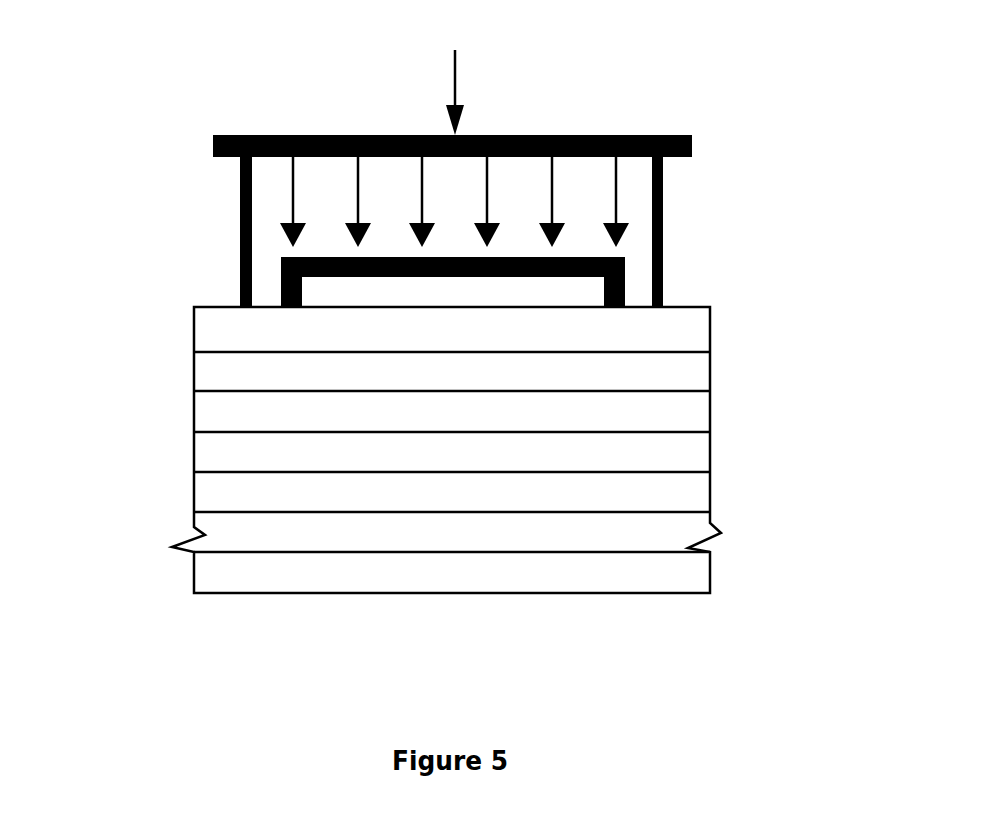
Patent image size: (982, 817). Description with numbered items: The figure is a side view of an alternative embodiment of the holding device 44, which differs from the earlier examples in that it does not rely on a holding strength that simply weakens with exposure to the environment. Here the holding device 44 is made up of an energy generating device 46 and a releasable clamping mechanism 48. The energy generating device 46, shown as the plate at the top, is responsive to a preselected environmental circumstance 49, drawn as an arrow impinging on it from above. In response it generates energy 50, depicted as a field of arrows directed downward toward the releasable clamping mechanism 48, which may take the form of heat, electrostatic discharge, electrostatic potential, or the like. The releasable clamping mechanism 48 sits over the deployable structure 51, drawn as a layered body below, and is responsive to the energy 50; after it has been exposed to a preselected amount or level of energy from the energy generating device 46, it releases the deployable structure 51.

The holding device 44 is at (110, 174).
The energy generating device 46 is at (684, 136).
The releasable clamping mechanism 48 is at (281, 283).
The preselected environmental circumstance 49 is at (458, 74).
The energy 50 is at (616, 193).
The deployable structure 51 is at (677, 412).